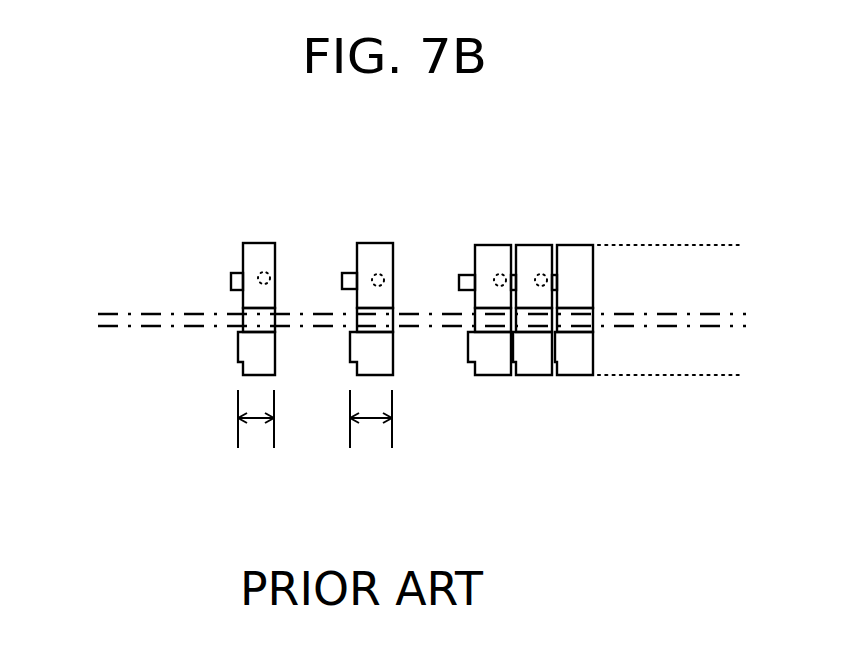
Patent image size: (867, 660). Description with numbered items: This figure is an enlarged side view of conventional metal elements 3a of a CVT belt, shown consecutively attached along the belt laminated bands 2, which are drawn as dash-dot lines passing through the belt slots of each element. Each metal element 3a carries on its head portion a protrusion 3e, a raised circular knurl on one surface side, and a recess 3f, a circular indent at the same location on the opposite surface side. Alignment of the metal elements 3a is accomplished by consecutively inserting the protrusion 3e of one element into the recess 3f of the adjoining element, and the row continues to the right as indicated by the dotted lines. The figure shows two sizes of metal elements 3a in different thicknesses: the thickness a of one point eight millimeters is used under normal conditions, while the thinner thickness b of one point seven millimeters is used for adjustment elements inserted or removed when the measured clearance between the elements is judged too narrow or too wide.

The belt laminated band 2 is at (152, 312).
The metal element 3a is at (258, 243).
The protrusion 3e is at (231, 283).
The recess 3f is at (275, 283).
The thickness a is at (367, 422).
The thickness b is at (250, 422).